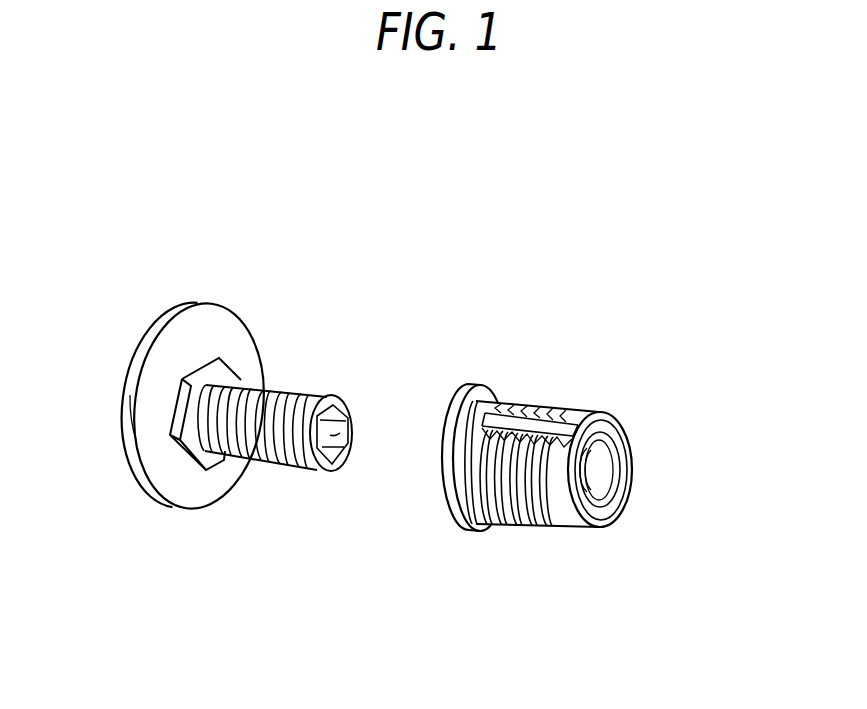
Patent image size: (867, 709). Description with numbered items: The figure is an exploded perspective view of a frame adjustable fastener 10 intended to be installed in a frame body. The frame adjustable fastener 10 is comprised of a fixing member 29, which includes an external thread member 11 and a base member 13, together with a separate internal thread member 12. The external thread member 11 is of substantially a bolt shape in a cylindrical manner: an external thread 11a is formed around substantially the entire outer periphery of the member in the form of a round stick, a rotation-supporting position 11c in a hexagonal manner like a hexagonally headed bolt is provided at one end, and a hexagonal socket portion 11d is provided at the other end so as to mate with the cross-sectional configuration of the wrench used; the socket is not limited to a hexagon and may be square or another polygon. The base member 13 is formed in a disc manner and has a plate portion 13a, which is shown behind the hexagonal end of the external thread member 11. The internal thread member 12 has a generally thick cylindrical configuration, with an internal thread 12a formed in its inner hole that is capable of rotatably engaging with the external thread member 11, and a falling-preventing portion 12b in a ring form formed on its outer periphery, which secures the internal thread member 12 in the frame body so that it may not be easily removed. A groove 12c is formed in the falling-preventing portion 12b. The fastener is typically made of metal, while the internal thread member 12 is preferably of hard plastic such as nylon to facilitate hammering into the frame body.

The frame adjustable fastener 10 is at (780, 181).
The fixing member 29 is at (347, 219).
The base member 13 is at (224, 303).
The plate portion 13a is at (127, 412).
The external thread member 11 is at (296, 375).
The external thread 11a is at (328, 395).
The rotation-supporting position 11c is at (197, 462).
The hexagonal socket portion 11d is at (348, 440).
The internal thread member 12 is at (552, 398).
The internal thread 12a is at (605, 462).
The falling-preventing portion 12b is at (519, 398).
The groove 12c is at (568, 432).